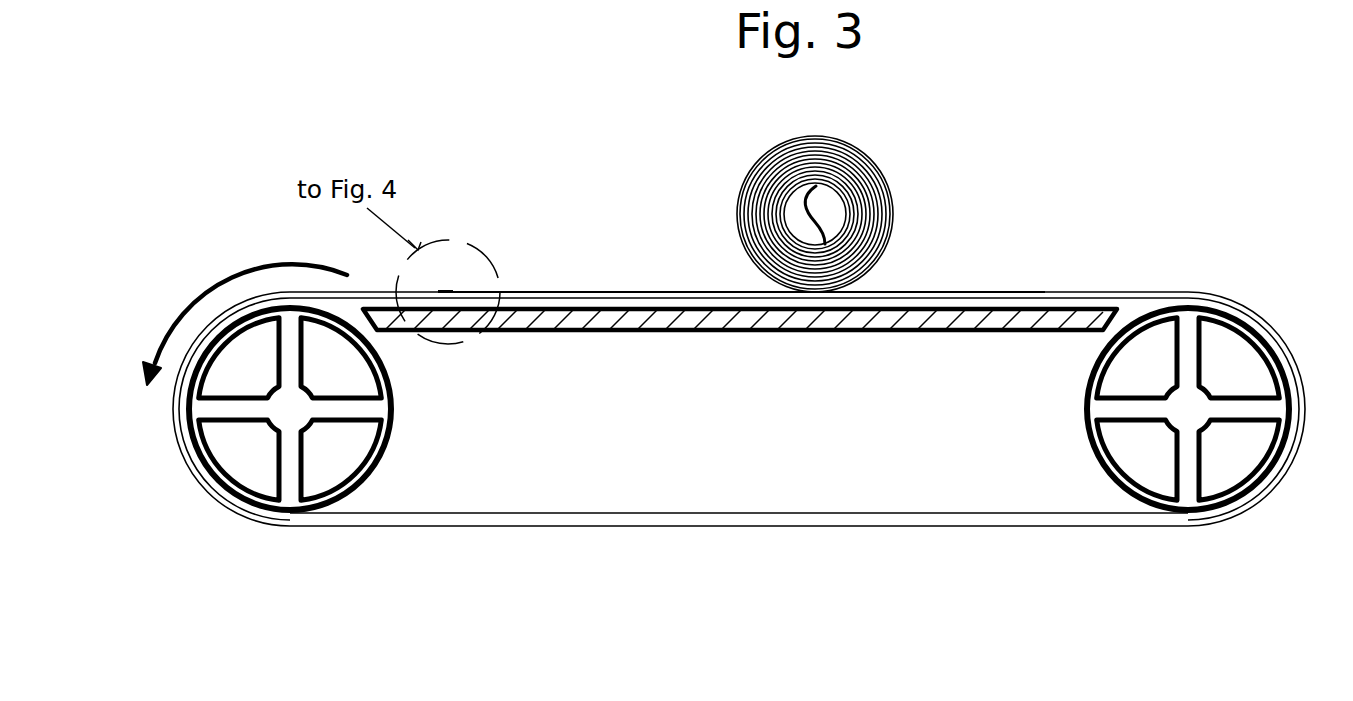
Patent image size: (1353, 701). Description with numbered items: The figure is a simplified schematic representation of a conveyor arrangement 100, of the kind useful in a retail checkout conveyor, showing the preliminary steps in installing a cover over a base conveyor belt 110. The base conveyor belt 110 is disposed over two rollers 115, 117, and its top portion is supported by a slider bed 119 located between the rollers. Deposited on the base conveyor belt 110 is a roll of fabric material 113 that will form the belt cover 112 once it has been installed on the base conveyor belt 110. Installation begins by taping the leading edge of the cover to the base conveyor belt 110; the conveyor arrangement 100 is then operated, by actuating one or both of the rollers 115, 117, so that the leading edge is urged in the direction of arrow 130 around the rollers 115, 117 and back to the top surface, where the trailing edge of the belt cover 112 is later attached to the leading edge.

The conveyor arrangement 100 is at (1113, 626).
The base conveyor belt 110 is at (1046, 297).
The belt cover 112 is at (690, 294).
The roll of fabric material 113 is at (768, 165).
The roller 115 is at (388, 445).
The roller 117 is at (1092, 453).
The slider bed 119 is at (645, 330).
The arrow 130 is at (230, 282).